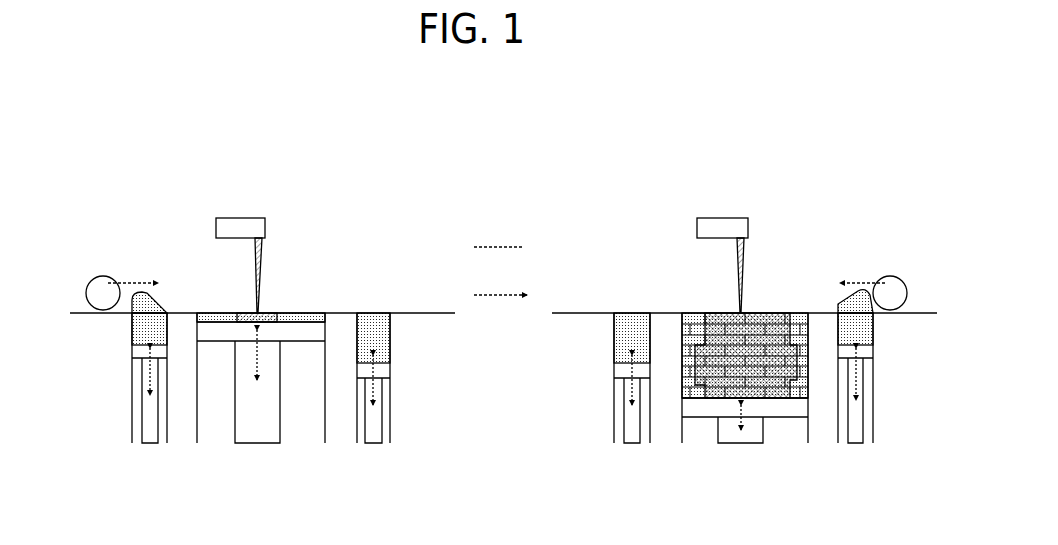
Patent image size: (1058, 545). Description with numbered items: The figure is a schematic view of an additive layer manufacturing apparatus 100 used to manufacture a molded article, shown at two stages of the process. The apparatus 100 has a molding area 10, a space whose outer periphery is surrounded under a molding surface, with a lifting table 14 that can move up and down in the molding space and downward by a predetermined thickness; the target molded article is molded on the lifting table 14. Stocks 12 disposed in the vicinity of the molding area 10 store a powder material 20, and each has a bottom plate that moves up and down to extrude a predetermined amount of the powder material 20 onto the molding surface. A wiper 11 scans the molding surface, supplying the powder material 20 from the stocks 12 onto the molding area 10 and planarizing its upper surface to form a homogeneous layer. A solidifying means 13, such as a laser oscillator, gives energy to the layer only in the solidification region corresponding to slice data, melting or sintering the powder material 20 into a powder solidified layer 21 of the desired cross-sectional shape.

The additive layer manufacturing apparatus 100 is at (398, 158).
The molding area 10 is at (326, 318).
The wiper 11 is at (98, 292).
The stock 12 is at (132, 358).
The solidifying means 13 is at (262, 223).
The lifting table 14 is at (307, 333).
The powder material 20 is at (312, 313).
The powder solidified layer 21 is at (236, 316).